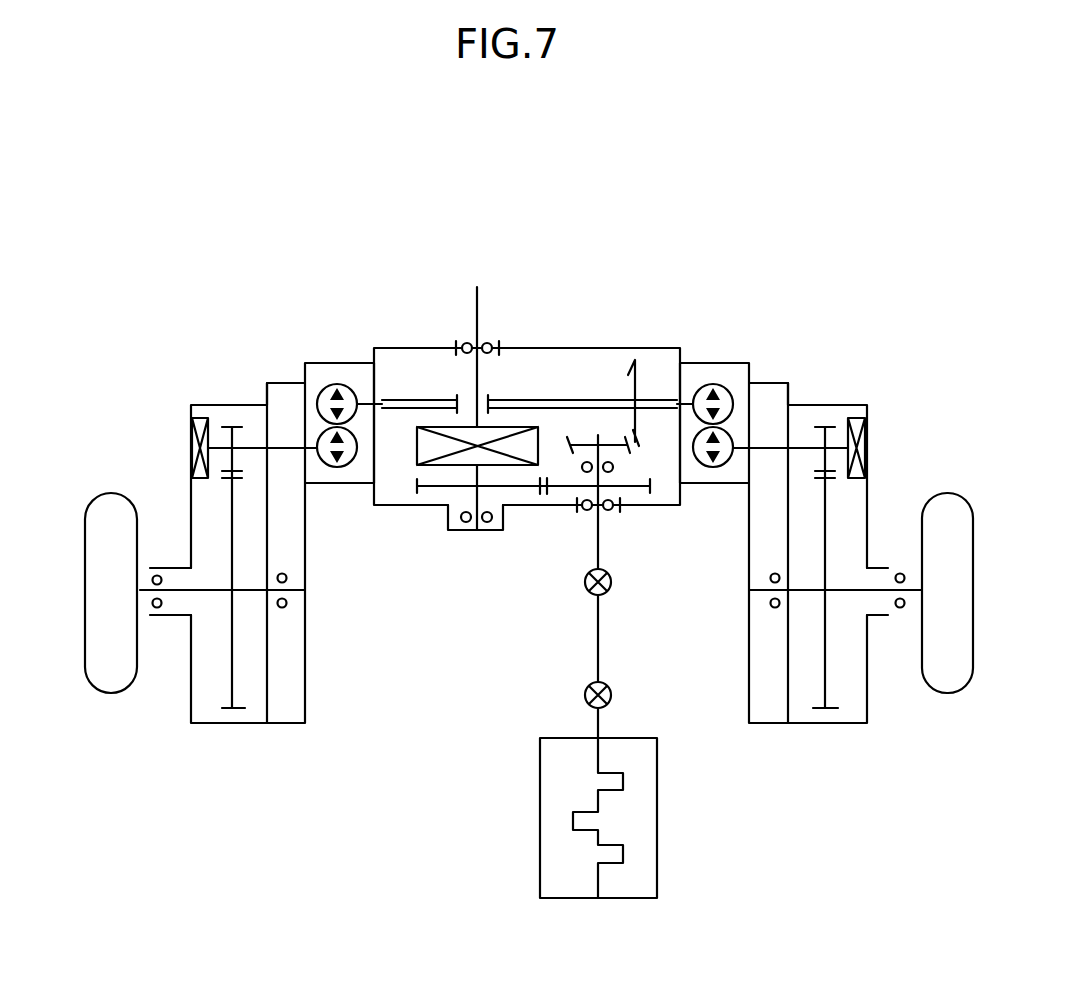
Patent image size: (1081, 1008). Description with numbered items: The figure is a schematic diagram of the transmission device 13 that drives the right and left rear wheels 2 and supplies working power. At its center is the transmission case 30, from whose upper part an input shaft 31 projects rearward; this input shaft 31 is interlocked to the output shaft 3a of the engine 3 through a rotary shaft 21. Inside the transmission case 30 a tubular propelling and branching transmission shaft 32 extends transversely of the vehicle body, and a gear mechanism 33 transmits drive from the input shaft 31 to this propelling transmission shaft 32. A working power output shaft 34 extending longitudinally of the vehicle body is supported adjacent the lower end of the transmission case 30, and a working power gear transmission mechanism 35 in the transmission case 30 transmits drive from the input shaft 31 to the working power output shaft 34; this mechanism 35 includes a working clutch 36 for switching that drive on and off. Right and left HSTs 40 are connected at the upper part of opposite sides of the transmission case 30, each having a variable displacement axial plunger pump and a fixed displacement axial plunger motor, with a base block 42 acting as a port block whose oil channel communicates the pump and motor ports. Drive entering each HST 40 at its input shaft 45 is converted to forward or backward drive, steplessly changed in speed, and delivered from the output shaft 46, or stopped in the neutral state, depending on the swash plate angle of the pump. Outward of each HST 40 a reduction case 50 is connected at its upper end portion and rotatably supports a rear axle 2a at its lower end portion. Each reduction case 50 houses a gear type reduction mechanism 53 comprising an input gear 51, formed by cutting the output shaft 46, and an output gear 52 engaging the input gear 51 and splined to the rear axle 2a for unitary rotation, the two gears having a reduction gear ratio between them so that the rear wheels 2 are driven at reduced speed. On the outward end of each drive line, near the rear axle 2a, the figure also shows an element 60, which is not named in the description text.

The rear wheel 2 is at (90, 605).
The rear axle 2a is at (187, 587).
The engine 3 is at (540, 858).
The output shaft 3a is at (598, 722).
The transmission device 13 is at (446, 546).
The rotary shaft 21 is at (598, 635).
The transmission case 30 is at (415, 334).
The input shaft 31 is at (598, 540).
The propelling and branching transmission shaft 32 is at (570, 392).
The gear mechanism 33 is at (653, 453).
The working power output shaft 34 is at (476, 312).
The working power gear transmission mechanism 35 is at (517, 488).
The working clutch 36 is at (415, 440).
The HST 40 is at (335, 363).
The base block 42 is at (290, 725).
The input shaft 45 is at (361, 395).
The output shaft 46 is at (280, 453).
The reduction case 50 is at (222, 725).
The input gear 51 is at (240, 432).
The output gear 52 is at (232, 667).
The gear type reduction mechanism 53 is at (528, 429).
The brake 60 is at (190, 448).